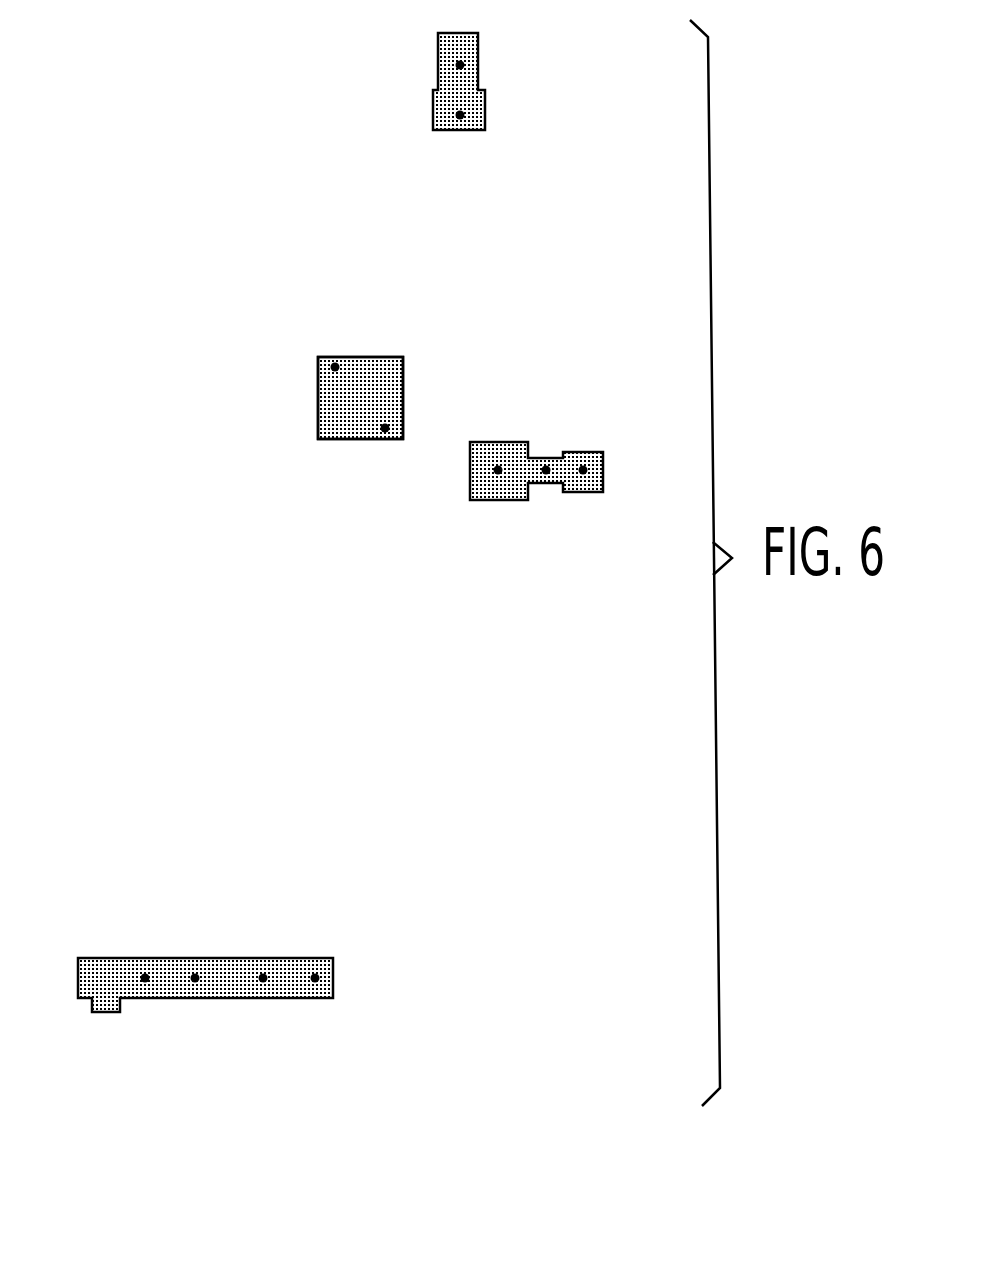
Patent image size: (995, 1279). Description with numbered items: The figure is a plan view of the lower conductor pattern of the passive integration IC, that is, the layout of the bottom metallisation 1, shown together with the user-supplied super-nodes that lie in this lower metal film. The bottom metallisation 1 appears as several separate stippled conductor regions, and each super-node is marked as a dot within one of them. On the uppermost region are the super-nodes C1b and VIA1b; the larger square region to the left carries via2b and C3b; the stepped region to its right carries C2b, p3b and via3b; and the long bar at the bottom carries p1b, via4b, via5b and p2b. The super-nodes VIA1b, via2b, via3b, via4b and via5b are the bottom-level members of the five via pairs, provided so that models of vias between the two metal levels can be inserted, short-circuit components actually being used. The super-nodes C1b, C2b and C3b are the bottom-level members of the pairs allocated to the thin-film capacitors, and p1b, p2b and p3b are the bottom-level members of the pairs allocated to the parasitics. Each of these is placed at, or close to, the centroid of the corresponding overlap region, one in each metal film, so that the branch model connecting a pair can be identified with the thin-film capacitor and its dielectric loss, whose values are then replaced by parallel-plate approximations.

The bottom metallisation 1 is at (545, 174).
The c1_b super-node C1b is at (458, 65).
The via1_b super-node VIA1b is at (458, 115).
The via2_b super-node via2b is at (333, 367).
The c3_b super-node C3b is at (385, 428).
The c2_b super-node C2b is at (498, 470).
The p3_b super-node p3b is at (546, 470).
The via3_b super-node via3b is at (583, 470).
The p1_b super-node p1b is at (195, 978).
The via4_b super-node via4b is at (315, 978).
The via5_b super-node via5b is at (145, 978).
The p2_b super-node p2b is at (263, 978).